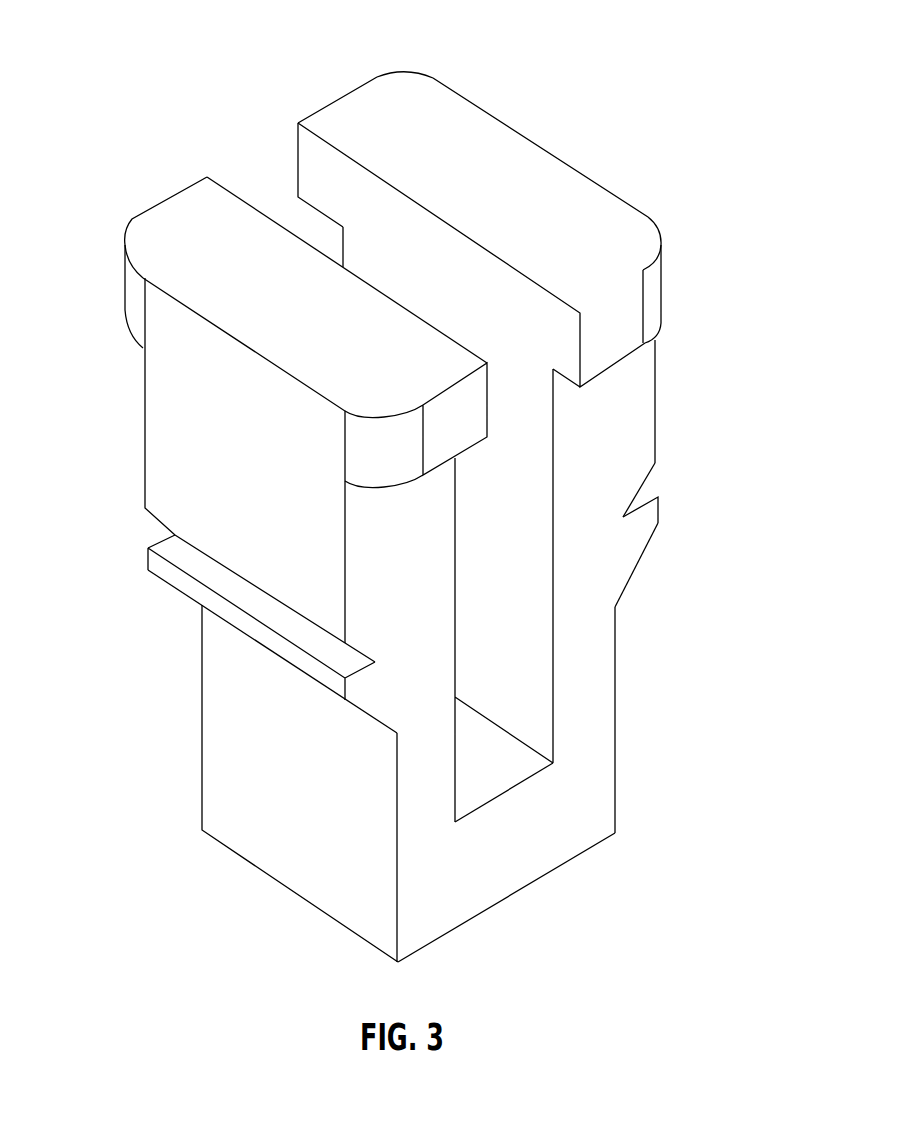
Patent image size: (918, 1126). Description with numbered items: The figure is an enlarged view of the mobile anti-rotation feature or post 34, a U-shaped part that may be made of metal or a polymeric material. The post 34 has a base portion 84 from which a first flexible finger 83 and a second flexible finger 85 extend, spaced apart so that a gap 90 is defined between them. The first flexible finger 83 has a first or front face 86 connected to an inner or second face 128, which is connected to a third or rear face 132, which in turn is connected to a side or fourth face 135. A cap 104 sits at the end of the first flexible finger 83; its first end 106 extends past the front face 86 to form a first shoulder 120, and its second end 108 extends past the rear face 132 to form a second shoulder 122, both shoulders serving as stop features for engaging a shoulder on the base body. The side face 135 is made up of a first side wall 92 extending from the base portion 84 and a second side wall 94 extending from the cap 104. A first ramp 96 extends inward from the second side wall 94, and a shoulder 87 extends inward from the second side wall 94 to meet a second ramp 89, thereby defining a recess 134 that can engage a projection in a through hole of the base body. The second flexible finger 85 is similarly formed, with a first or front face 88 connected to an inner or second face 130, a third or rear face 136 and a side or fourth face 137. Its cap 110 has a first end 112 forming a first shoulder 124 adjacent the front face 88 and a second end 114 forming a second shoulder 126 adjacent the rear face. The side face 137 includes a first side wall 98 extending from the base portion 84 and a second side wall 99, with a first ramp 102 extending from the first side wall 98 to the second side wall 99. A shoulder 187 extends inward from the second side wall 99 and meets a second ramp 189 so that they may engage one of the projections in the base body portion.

The mobile anti-rotation feature or post 34 is at (702, 283).
The first flexible finger 83 is at (171, 182).
The base portion 84 is at (567, 840).
The second flexible finger 85 is at (320, 98).
The first or front face 86 is at (428, 600).
The shoulder 87 is at (194, 570).
The first or front face 88 is at (648, 402).
The second ramp 89 is at (293, 617).
The gap 90 is at (237, 143).
The first side wall 92 is at (206, 766).
The second side wall 94 is at (165, 455).
The first ramp 96 is at (370, 724).
The first side wall 98 is at (618, 674).
The second side wall 99 is at (657, 433).
The first ramp 102 is at (638, 565).
The cap 104 is at (163, 262).
The first end 106 is at (436, 357).
The second end 108 is at (130, 267).
The cap 110 is at (420, 90).
The first end 112 is at (607, 300).
The second end 114 is at (377, 77).
The first shoulder 120 is at (392, 487).
The second shoulder 122 is at (130, 343).
The first shoulder 124 is at (635, 365).
The second shoulder 126 is at (310, 207).
The inner or second face 128 is at (456, 748).
The inner or second face 130 is at (523, 662).
The third or rear face 132 is at (140, 430).
The recess 134 is at (235, 594).
The side or fourth face 135 is at (188, 679).
The third or rear face 136 is at (340, 249).
The side or fourth face 137 is at (667, 390).
The shoulder 187 is at (653, 496).
The second ramp 189 is at (653, 468).